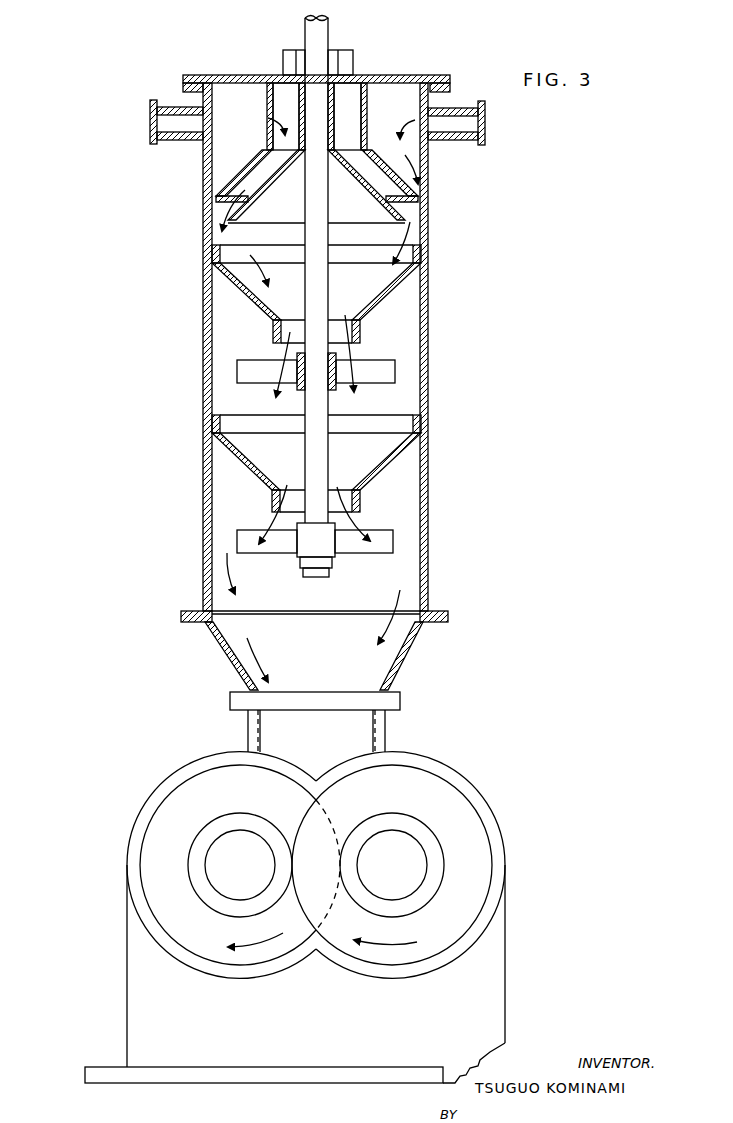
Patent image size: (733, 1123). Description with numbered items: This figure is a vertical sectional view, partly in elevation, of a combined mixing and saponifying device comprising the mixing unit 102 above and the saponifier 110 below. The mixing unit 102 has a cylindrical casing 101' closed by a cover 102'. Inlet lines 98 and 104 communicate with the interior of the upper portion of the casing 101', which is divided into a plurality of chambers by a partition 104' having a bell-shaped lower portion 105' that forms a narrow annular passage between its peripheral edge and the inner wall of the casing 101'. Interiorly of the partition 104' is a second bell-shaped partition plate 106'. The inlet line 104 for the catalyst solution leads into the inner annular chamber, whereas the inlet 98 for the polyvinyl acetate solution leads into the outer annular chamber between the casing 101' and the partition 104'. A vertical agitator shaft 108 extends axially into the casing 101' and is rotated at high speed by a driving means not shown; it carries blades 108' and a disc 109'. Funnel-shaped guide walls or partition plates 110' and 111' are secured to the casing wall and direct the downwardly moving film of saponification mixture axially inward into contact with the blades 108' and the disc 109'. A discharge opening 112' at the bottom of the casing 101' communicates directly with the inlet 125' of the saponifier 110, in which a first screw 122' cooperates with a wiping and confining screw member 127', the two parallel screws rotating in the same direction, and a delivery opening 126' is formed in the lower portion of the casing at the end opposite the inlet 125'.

The inlet line 98 is at (465, 127).
The cylindrical casing 101' is at (350, 347).
The mixing unit 102 is at (157, 350).
The cover 102' is at (351, 52).
The inlet line 104 is at (176, 136).
The partition 104' is at (320, 97).
The bell-shaped lower portion 105' is at (350, 176).
The second bell-shaped partition plate 106' is at (364, 186).
The vertical agitator shaft 108 is at (393, 270).
The blades 108' is at (362, 371).
The disc 109' is at (361, 550).
The saponifier 110 is at (276, 917).
The funnel-shaped guide wall 110' is at (349, 294).
The funnel-shaped guide wall 111' is at (352, 463).
The discharge opening 112' is at (312, 660).
The first screw 122' is at (236, 848).
The inlet 125' is at (354, 731).
The delivery opening 126' is at (264, 1093).
The screw member 127' is at (406, 860).